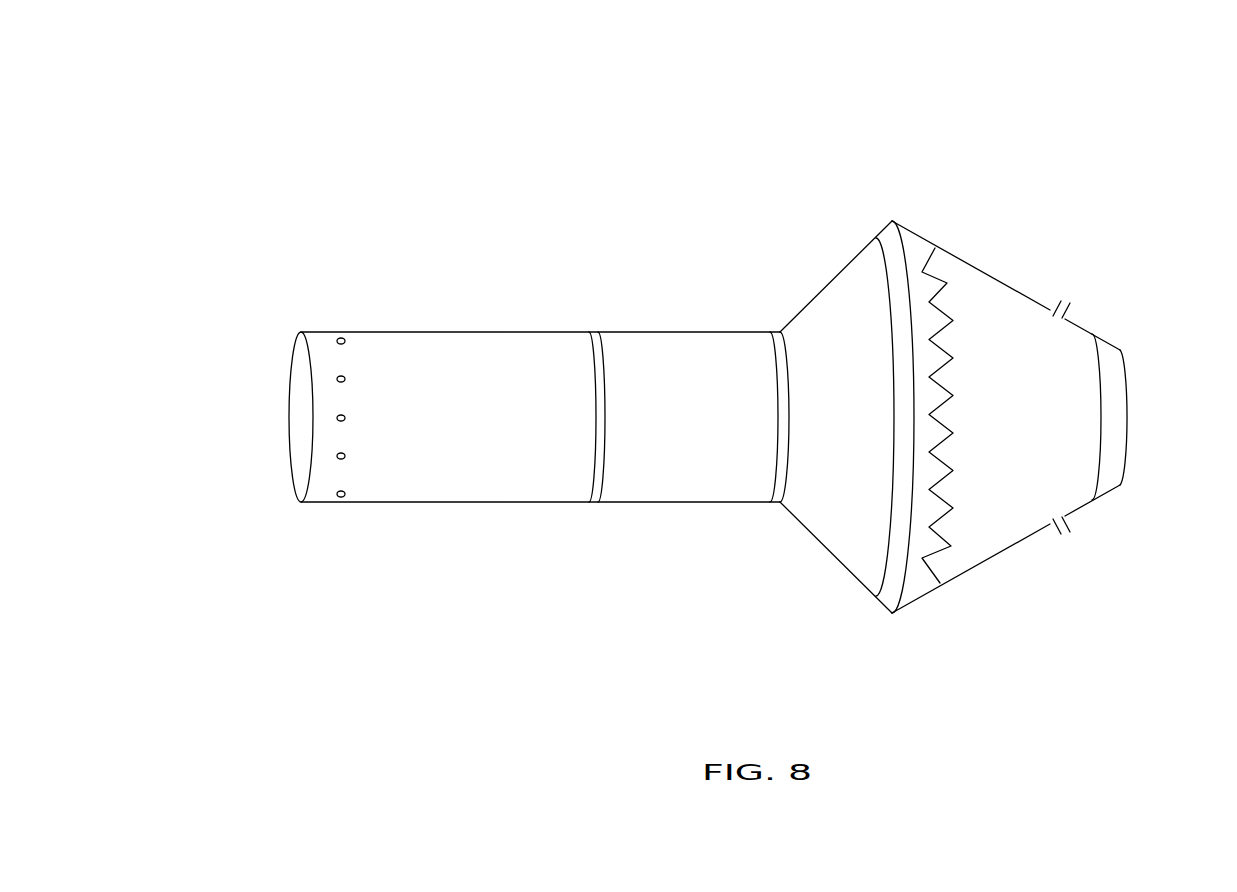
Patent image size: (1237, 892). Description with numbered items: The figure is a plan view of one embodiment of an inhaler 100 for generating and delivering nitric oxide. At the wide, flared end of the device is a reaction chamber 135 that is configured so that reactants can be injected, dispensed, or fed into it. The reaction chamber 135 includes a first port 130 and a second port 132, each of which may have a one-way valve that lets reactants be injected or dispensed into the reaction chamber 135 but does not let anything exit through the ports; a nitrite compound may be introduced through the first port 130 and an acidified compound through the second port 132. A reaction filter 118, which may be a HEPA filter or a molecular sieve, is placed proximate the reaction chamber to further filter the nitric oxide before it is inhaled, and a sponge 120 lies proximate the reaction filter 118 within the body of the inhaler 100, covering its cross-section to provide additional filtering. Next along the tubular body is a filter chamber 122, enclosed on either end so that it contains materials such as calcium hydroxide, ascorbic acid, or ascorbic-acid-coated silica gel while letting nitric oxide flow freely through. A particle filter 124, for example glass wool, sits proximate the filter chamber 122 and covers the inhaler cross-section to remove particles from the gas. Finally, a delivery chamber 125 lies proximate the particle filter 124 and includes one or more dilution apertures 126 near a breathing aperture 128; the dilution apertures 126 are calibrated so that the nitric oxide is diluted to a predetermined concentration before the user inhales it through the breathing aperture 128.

The inhaler 100 is at (972, 125).
The reaction filter 118 is at (941, 275).
The sponge 120 is at (888, 238).
The filter chamber 122 is at (685, 357).
The particle filter 124 is at (592, 347).
The delivery chamber 125 is at (482, 490).
The dilution apertures 126 is at (341, 338).
The breathing aperture 128 is at (302, 412).
The first port 130 is at (1066, 311).
The second port 132 is at (1066, 530).
The reaction chamber 135 is at (1015, 513).